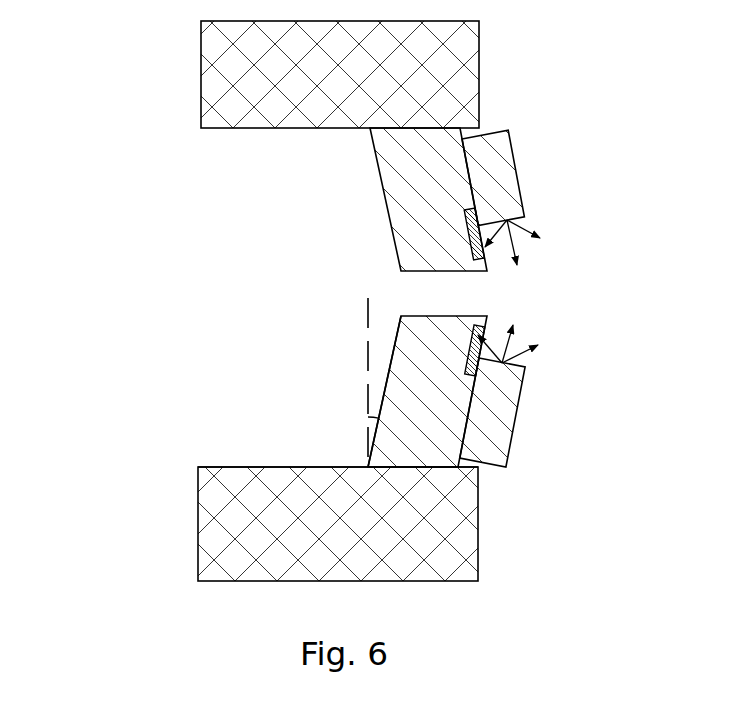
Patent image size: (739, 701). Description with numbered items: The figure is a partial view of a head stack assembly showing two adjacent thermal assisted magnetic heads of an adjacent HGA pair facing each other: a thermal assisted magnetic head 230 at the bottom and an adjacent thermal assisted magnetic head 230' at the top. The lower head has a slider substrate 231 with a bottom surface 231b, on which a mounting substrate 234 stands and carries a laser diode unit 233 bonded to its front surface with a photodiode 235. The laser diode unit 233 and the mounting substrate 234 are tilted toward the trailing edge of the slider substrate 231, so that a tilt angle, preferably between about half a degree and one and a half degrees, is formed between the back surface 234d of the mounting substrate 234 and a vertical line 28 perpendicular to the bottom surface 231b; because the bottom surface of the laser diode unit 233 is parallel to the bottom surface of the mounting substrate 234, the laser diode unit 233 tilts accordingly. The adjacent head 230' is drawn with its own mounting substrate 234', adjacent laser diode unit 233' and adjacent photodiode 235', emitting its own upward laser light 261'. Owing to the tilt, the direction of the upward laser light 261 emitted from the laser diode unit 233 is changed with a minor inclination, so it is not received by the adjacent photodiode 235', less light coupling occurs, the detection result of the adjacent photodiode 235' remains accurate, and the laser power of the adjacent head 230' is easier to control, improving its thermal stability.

The adjacent thermal assisted magnetic head 230' is at (347, 146).
The slider substrate 231 is at (456, 540).
The bottom surface of the slider substrate 231b is at (312, 467).
The laser diode unit 233 is at (557, 412).
The adjacent laser diode unit 233' is at (559, 172).
The mounting substrate 234 is at (509, 391).
The mounting substrate of the adjacent head 234' is at (428, 199).
The back surface of the mounting substrate 234d is at (390, 370).
The photodiode 235 is at (561, 337).
The adjacent photodiode 235' is at (380, 221).
The upward laser light 261 is at (517, 331).
The upward laser light of the adjacent laser diode 261' is at (528, 246).
The vertical line 28 is at (368, 358).
The thermal assisted magnetic head 230 is at (353, 408).